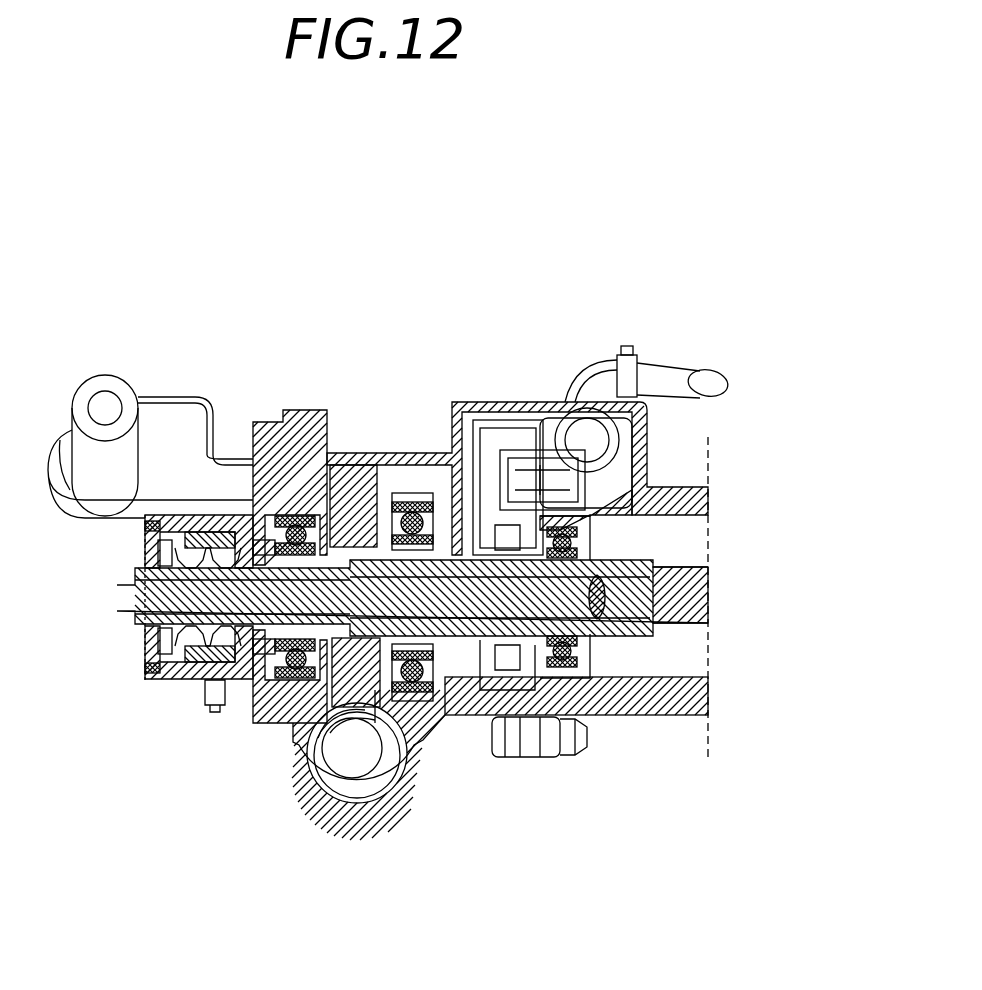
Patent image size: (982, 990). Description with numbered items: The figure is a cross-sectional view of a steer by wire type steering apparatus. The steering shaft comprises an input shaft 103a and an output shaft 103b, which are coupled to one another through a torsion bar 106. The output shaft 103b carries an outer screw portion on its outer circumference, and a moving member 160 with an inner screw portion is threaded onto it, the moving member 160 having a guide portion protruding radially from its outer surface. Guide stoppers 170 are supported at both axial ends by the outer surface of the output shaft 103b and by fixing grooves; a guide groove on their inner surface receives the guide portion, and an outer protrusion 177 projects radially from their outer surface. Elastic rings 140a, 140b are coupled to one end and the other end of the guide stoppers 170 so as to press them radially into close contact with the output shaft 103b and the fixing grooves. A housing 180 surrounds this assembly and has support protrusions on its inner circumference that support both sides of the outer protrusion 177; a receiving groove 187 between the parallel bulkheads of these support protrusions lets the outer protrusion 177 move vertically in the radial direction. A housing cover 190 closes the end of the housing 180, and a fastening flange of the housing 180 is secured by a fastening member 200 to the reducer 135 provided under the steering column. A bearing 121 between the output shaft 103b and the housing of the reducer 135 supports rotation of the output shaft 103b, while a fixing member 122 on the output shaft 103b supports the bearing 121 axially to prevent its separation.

The outer protrusion 177 is at (192, 515).
The receiving groove 187 is at (200, 515).
The elastic ring 140a is at (230, 508).
The elastic ring 140b is at (145, 522).
The fixing member 122 is at (265, 547).
The bearing 121 is at (300, 550).
The moving member 160 is at (150, 560).
The housing cover 190 is at (148, 652).
The housing 180 is at (148, 672).
The guide stopper 170 is at (192, 672).
The fastening member 200 is at (210, 700).
The output shaft 103b is at (297, 660).
The input shaft 103a is at (680, 600).
The torsion bar 106 is at (535, 735).
The reducer 135 is at (348, 856).